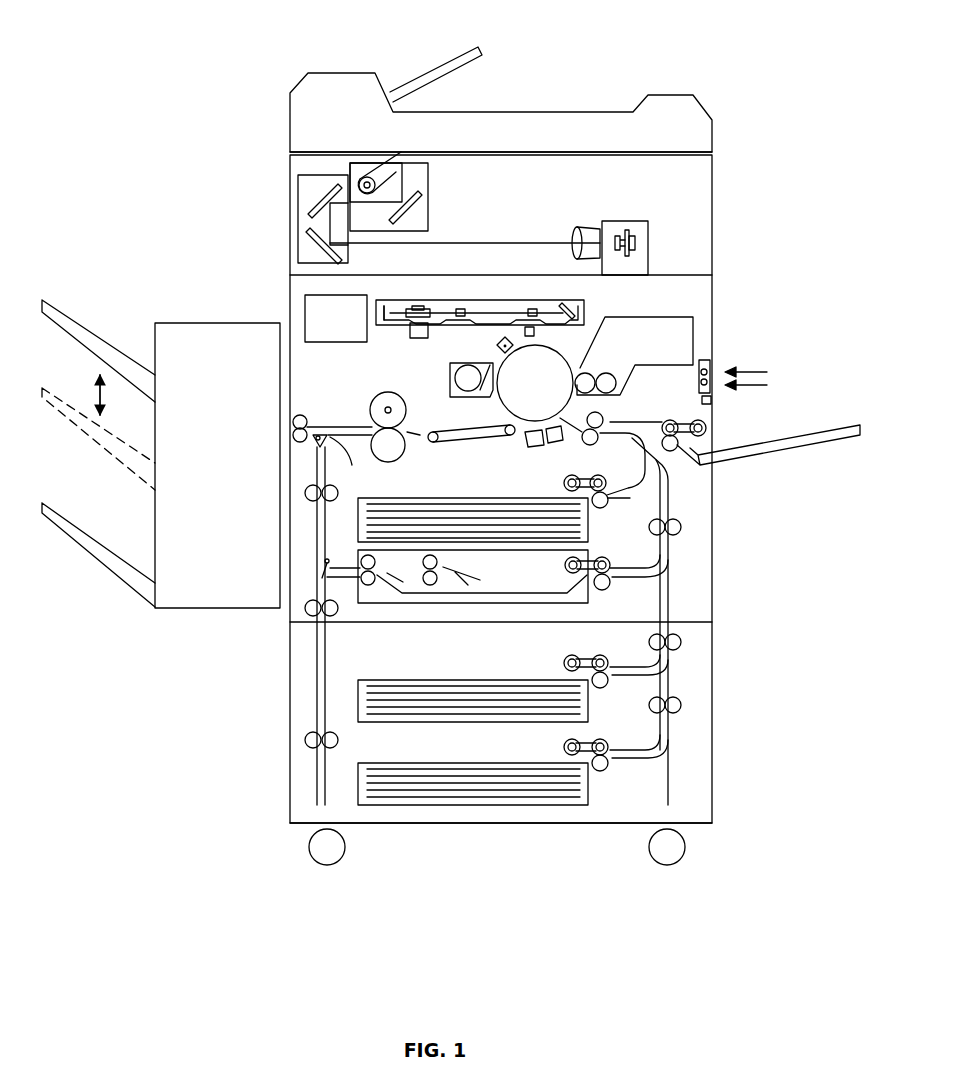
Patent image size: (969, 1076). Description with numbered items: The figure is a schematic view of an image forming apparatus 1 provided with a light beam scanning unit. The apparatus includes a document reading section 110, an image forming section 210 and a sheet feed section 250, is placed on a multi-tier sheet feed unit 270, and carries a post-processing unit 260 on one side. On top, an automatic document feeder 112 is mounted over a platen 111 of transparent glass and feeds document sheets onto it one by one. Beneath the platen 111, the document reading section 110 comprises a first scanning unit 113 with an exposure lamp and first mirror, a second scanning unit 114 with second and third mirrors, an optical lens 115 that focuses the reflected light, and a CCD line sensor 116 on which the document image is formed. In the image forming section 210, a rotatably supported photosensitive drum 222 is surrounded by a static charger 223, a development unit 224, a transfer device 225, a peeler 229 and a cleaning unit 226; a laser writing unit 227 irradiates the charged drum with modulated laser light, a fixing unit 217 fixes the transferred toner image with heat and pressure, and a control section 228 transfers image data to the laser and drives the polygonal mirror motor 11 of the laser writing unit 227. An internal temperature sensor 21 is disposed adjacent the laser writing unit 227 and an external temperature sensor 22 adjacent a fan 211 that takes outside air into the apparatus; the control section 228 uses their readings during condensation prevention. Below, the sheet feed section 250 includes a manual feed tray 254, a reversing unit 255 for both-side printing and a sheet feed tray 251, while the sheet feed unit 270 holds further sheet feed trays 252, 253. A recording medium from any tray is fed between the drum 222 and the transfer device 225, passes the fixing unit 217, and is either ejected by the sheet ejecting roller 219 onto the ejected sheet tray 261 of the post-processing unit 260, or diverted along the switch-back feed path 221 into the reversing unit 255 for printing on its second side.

The image forming apparatus 1 is at (714, 78).
The document reading section 110 is at (678, 200).
The platen 111 is at (495, 153).
The automatic document feeder 112 is at (332, 95).
The first scanning unit 113 is at (430, 226).
The second scanning unit 114 is at (305, 222).
The optical lens 115 is at (577, 228).
The CCD line sensor 116 is at (625, 226).
The internal temperature sensor 21 is at (531, 326).
The polygonal mirror motor 11 is at (410, 337).
The laser writing unit 227 is at (380, 325).
The control section 228 is at (313, 320).
The static charger 223 is at (495, 345).
The photosensitive drum 222 is at (566, 358).
The cleaning unit 226 is at (456, 378).
The development unit 224 is at (693, 320).
The image forming section 210 is at (706, 341).
The fan 211 is at (713, 362).
The external temperature sensor 22 is at (712, 400).
The manual feed tray 254 is at (847, 427).
The sheet ejecting roller 219 is at (306, 416).
The fixing unit 217 is at (408, 407).
The peeler 229 is at (533, 447).
The switch-back feed path 221 is at (326, 460).
The transfer device 225 is at (558, 455).
The sheet feed section 250 is at (690, 537).
The sheet feed tray 251 is at (392, 498).
The reversing unit 255 is at (492, 602).
The sheet feed unit 270 is at (696, 680).
The sheet feed tray 252 is at (450, 680).
The sheet feed tray 253 is at (449, 764).
The post-processing unit 260 is at (190, 322).
The ejected sheet tray 261 is at (84, 322).